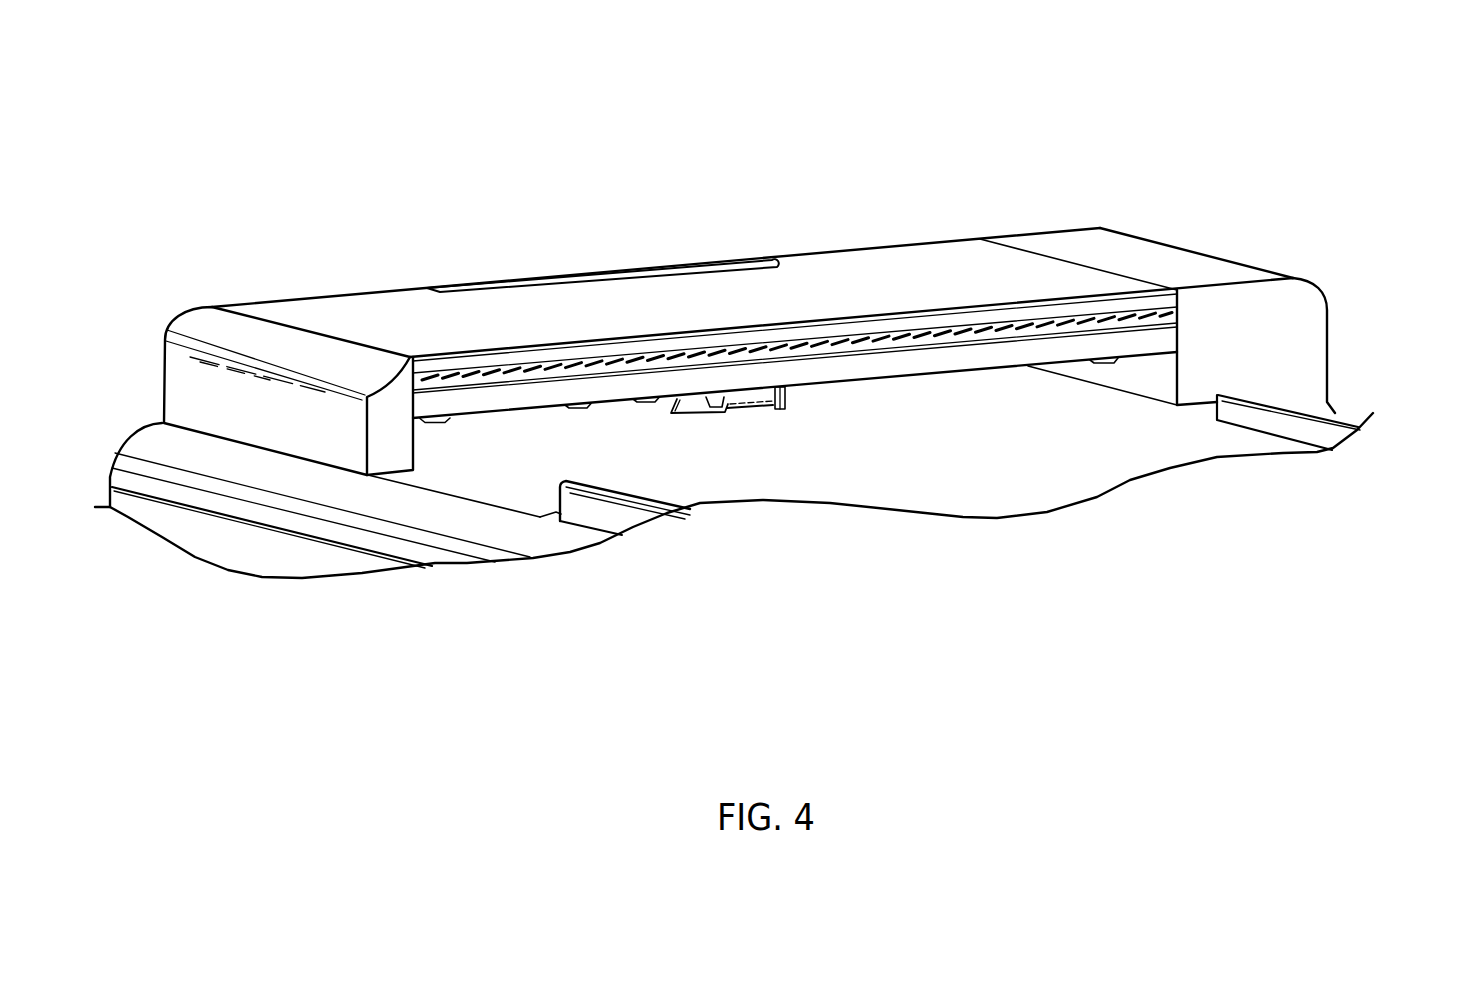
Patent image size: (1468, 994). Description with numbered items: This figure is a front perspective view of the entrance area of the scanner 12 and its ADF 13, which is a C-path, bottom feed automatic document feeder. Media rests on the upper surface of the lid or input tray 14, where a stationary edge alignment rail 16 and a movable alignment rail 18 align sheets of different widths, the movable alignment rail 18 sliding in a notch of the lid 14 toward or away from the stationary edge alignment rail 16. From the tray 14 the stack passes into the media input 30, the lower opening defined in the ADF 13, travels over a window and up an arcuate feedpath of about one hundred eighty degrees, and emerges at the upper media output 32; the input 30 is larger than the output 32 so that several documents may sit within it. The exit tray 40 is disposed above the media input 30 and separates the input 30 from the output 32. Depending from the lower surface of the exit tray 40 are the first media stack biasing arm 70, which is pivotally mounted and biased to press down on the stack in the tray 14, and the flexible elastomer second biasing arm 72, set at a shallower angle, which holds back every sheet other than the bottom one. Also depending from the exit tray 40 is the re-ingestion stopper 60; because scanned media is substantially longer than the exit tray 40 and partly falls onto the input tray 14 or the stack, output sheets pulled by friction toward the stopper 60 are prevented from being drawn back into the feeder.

The scanner 12 is at (1236, 167).
The ADF 13 is at (1040, 231).
The lid/input tray 14 is at (987, 503).
The stationary edge alignment rail 16 is at (1333, 420).
The movable alignment rail 18 is at (617, 522).
The media input 30 is at (1047, 389).
The media output 32 is at (1200, 313).
The exit tray 40 is at (943, 377).
The re-ingestion stopper 60 is at (792, 395).
The first media stack biasing arm 70 is at (750, 405).
The second biasing arm 72 is at (686, 416).